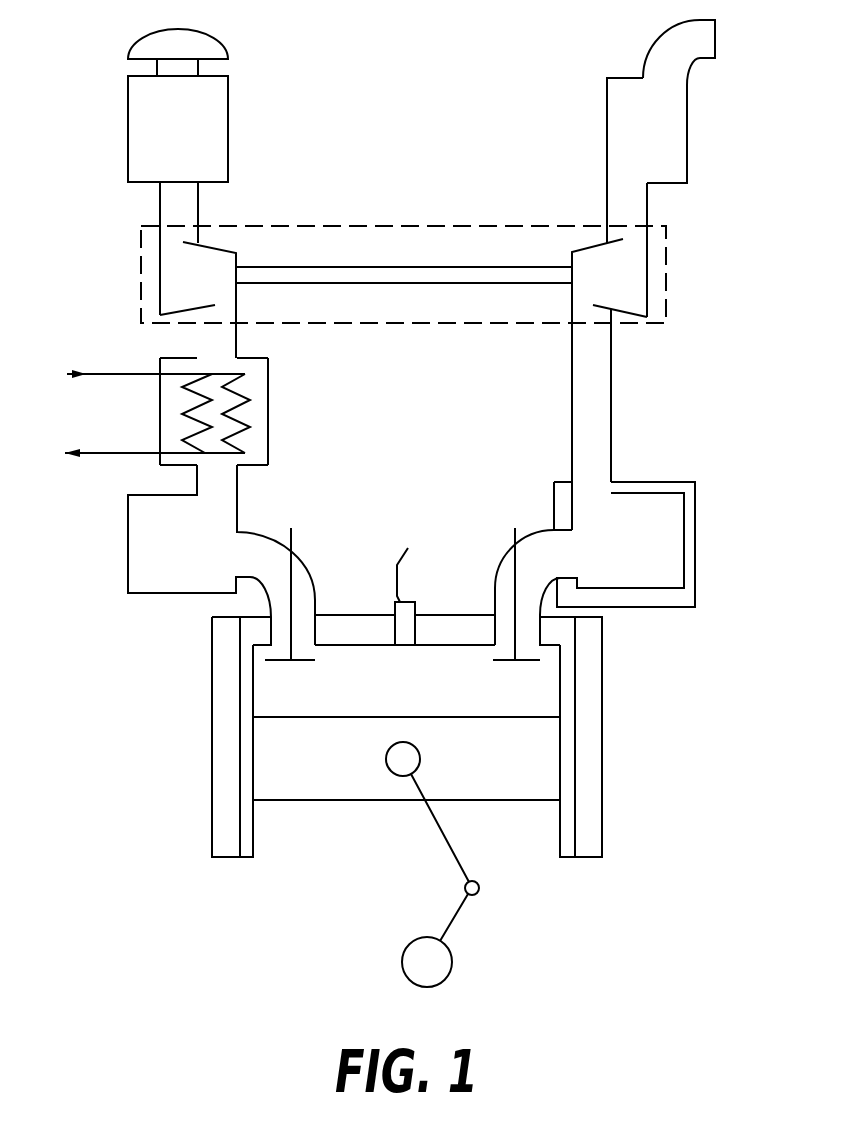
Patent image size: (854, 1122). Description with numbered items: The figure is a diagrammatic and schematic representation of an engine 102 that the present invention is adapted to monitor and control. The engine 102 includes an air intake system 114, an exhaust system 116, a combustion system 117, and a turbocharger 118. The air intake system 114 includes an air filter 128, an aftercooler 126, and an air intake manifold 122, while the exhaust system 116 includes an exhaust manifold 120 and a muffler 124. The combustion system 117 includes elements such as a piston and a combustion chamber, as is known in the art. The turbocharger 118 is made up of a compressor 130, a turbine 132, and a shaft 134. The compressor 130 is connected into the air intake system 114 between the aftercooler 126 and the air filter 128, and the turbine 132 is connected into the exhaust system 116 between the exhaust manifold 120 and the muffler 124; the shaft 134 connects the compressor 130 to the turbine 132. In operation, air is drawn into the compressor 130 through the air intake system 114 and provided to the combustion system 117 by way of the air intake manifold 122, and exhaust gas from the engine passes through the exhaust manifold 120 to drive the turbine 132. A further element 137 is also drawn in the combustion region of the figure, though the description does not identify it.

The engine 102 is at (483, 121).
The air intake system 114 is at (78, 415).
The exhaust system 116 is at (637, 73).
The combustion system 117 is at (278, 672).
The turbocharger 118 is at (453, 214).
The exhaust manifold 120 is at (665, 607).
The air intake manifold 122 is at (145, 594).
The muffler 124 is at (687, 158).
The aftercooler 126 is at (268, 400).
The air filter 128 is at (128, 136).
The compressor 130 is at (160, 285).
The turbine 132 is at (647, 281).
The shaft 134 is at (515, 267).
The fuel injector 137 is at (403, 612).